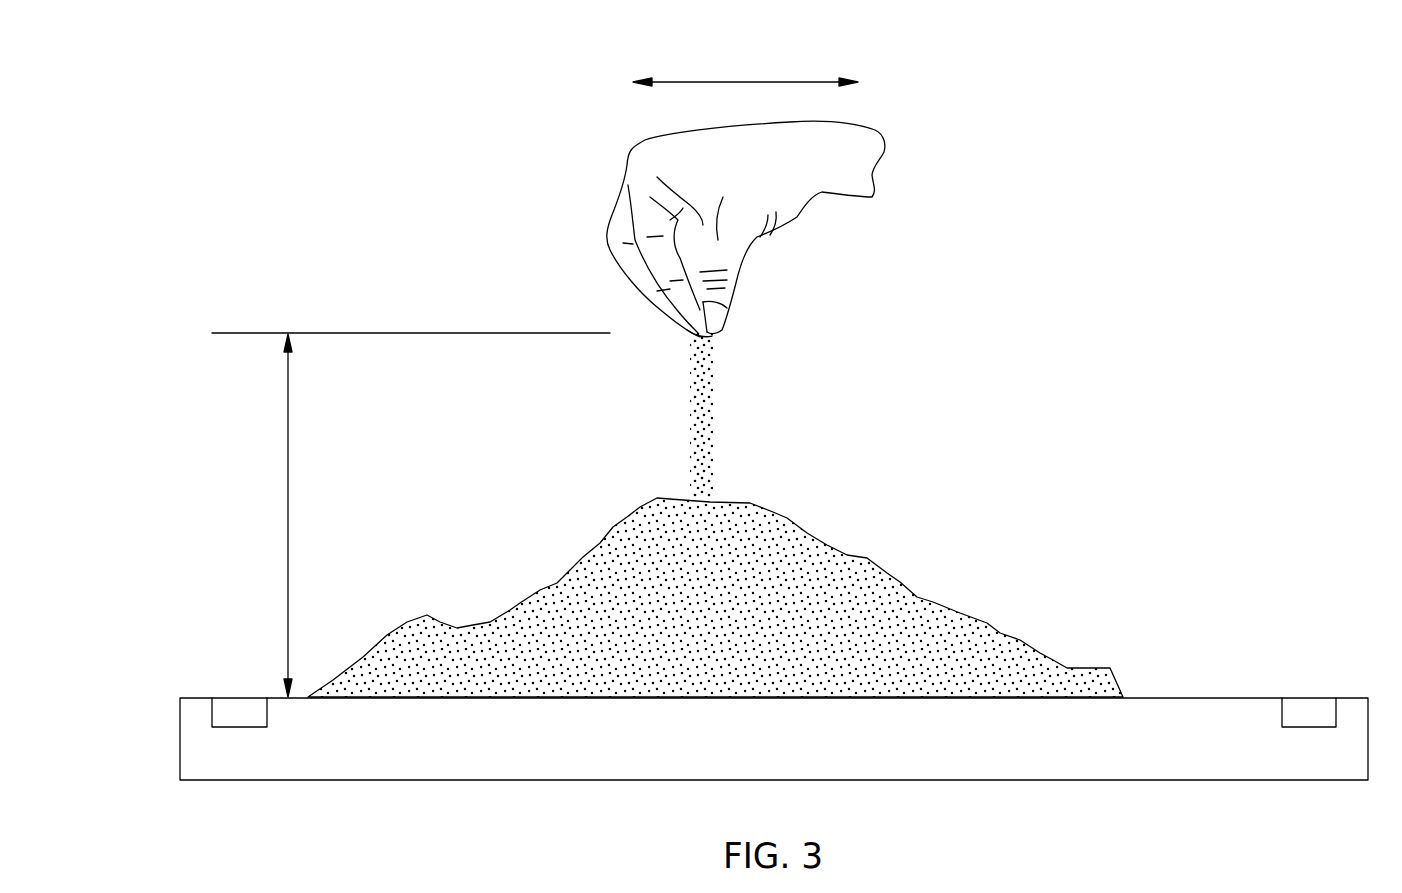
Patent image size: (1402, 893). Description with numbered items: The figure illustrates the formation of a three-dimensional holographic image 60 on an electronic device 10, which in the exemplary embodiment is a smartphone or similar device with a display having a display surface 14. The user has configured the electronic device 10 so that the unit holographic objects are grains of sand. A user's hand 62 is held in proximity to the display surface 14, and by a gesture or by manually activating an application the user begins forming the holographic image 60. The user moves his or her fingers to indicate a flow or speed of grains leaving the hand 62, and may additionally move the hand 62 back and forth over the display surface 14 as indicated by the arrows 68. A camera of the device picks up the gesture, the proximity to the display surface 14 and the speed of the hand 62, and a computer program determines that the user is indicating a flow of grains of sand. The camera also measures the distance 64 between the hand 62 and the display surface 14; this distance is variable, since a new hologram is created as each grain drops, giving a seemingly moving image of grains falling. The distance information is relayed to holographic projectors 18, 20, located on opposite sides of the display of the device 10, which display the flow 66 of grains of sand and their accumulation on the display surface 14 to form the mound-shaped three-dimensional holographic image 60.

The electronic device 10 is at (735, 698).
The display surface 14 is at (780, 712).
The holographic projectors 18 is at (1303, 708).
The holographic projectors 20 is at (237, 697).
The 3D holographic image 60 is at (955, 615).
The user's hand 62 is at (800, 217).
The distance 64 is at (297, 448).
The flow 66 is at (712, 432).
The arrows 68 is at (805, 80).